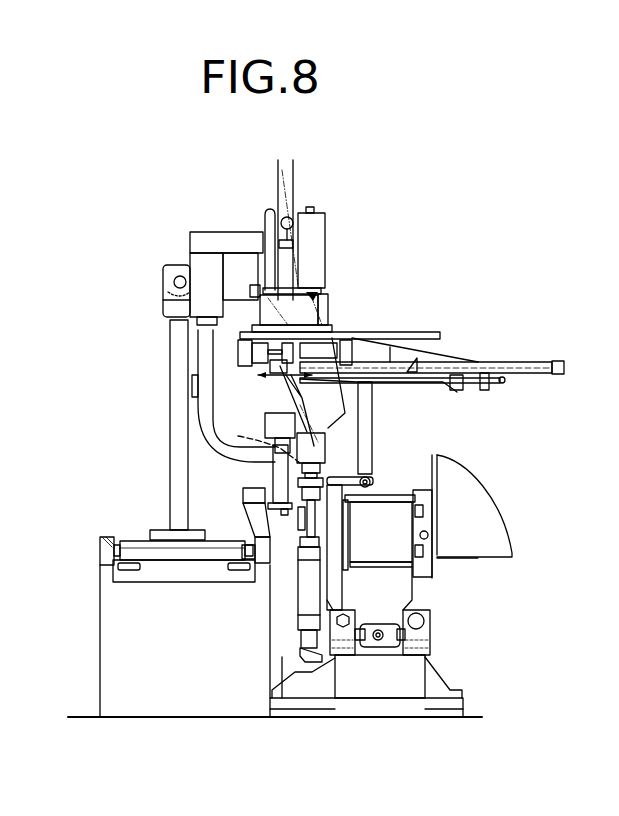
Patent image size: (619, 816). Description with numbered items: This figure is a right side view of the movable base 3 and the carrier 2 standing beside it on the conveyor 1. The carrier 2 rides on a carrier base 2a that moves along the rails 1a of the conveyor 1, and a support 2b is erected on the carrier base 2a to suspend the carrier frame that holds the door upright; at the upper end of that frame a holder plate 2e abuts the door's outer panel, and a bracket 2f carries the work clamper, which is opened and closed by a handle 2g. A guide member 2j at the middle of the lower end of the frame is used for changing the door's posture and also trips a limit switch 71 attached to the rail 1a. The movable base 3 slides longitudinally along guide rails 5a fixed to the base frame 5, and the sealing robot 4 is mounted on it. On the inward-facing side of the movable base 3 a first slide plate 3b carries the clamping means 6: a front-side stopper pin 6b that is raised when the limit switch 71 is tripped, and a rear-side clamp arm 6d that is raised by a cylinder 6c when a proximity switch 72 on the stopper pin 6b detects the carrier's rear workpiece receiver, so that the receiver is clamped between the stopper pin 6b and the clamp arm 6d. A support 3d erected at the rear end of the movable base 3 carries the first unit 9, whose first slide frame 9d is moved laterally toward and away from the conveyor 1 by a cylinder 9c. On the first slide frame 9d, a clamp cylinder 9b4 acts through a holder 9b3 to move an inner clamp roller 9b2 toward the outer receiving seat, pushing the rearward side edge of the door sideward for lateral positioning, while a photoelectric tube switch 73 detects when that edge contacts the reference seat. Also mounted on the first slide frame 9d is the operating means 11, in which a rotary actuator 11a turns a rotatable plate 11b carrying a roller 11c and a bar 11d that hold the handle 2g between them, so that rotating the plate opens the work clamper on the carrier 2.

The conveyor 1 is at (107, 530).
The rail 1a is at (101, 545).
The carrier 2 is at (184, 246).
The carrier base 2a is at (135, 543).
The support 2b is at (175, 417).
The holder plate 2e is at (254, 285).
The bracket 2f is at (244, 235).
The handle 2g is at (290, 217).
The guide member 2j is at (273, 470).
The movable base 3 is at (393, 500).
The first slide plate 3b is at (329, 597).
The support 3d is at (372, 429).
The robot 4 is at (485, 540).
The base frame 5 is at (386, 690).
The guide rail 5a is at (330, 637).
The clamping means 6 is at (357, 480).
The front-side stopper pin 6b is at (266, 438).
The cylinder 6c is at (302, 593).
The rear-side clamp arm 6d is at (322, 451).
The limit switch 71 is at (243, 493).
The proximity switch 72 is at (317, 440).
The photoelectric tube switch 73 is at (280, 392).
The first unit 9 is at (250, 364).
The inner clamp roller 9b2 is at (292, 313).
The holder 9b3 is at (243, 333).
The clamp cylinder 9b4 is at (322, 346).
The cylinder 9c is at (522, 362).
The first slide frame 9d is at (376, 350).
The operating means 11 is at (335, 298).
The rotary actuator 11a is at (328, 304).
The rotatable plate 11b is at (312, 290).
The roller 11c is at (322, 225).
The bar 11d is at (271, 212).